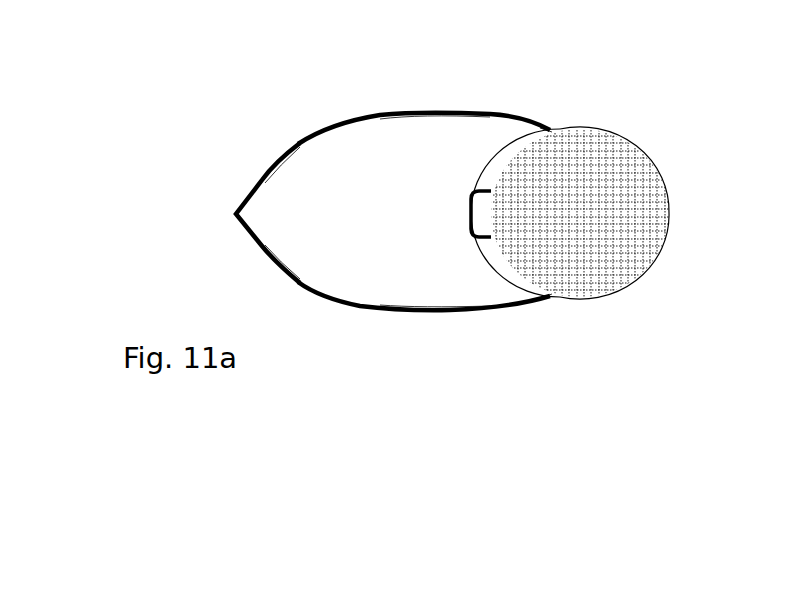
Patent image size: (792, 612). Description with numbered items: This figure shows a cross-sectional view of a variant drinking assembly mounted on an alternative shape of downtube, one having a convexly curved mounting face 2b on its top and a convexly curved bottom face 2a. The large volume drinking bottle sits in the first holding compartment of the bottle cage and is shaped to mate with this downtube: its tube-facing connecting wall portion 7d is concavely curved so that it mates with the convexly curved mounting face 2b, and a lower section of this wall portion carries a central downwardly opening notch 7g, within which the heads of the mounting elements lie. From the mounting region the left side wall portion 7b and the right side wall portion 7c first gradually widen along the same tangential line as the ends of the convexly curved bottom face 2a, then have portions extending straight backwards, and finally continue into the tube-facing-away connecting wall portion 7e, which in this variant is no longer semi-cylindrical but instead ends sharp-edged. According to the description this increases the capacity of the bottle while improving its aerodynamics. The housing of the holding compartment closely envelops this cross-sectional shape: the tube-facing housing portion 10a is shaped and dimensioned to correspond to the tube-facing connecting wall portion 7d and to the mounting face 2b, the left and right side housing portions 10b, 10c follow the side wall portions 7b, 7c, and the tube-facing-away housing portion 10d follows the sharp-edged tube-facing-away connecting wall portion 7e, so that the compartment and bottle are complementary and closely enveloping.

The bottom face 2a is at (633, 260).
The mounting face 2b is at (530, 142).
The left side wall portion 7b is at (420, 120).
The right side wall portion 7c is at (437, 313).
The tube-facing connecting wall portion 7d is at (503, 265).
The tube-facing-away connecting wall portion 7e is at (278, 155).
The notch 7g is at (477, 215).
The tube-facing housing portion 10a is at (497, 267).
The left side housing portion 10b is at (395, 113).
The right side housing portion 10c is at (417, 313).
The tube-facing-away housing portion 10d is at (282, 268).